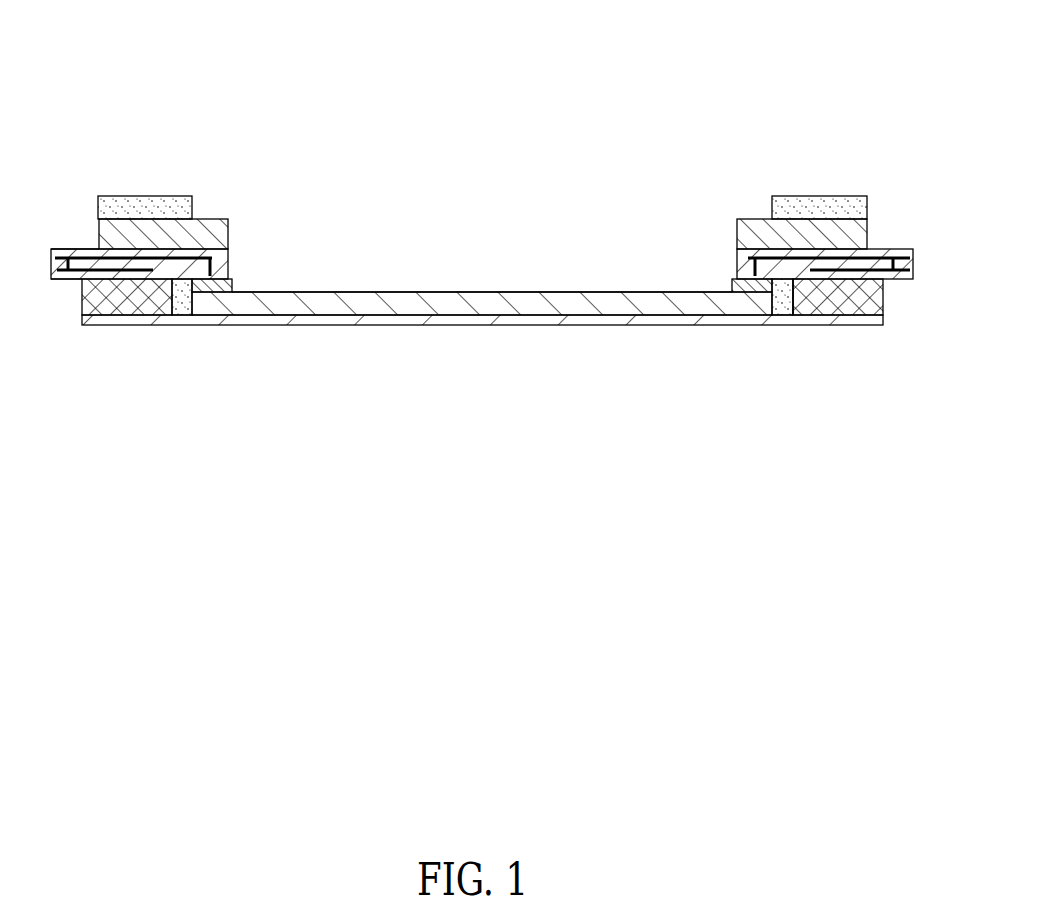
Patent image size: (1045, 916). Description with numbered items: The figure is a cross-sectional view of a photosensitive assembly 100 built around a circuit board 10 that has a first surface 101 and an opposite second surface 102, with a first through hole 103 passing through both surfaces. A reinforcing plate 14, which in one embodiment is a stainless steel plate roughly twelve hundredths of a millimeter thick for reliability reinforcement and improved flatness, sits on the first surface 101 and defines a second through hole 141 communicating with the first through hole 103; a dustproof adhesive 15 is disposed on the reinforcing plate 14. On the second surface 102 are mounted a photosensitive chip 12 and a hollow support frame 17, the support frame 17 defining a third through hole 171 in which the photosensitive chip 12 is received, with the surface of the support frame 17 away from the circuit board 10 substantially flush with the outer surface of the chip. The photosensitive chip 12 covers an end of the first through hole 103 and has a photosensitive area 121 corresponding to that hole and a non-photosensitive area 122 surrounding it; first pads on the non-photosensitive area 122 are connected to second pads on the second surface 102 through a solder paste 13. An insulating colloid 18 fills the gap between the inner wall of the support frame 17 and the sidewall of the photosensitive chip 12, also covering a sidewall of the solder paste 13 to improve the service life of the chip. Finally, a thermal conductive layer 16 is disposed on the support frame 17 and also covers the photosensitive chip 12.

The photosensitive assembly 100 is at (475, 39).
The circuit board 10 is at (75, 253).
The first surface 101 is at (91, 244).
The second surface 102 is at (73, 284).
The first through hole 103 is at (314, 259).
The photosensitive chip 12 is at (482, 360).
The photosensitive area 121 is at (470, 292).
The non-photosensitive area 122 is at (515, 376).
The solder paste 13 is at (213, 292).
The reinforcing plate 14 is at (857, 234).
The second through hole 141 is at (677, 231).
The dustproof adhesive 15 is at (820, 207).
The thermal conductive layer 16 is at (753, 320).
The support frame 17 is at (858, 308).
The third through hole 171 is at (802, 295).
The insulating colloid 18 is at (786, 310).